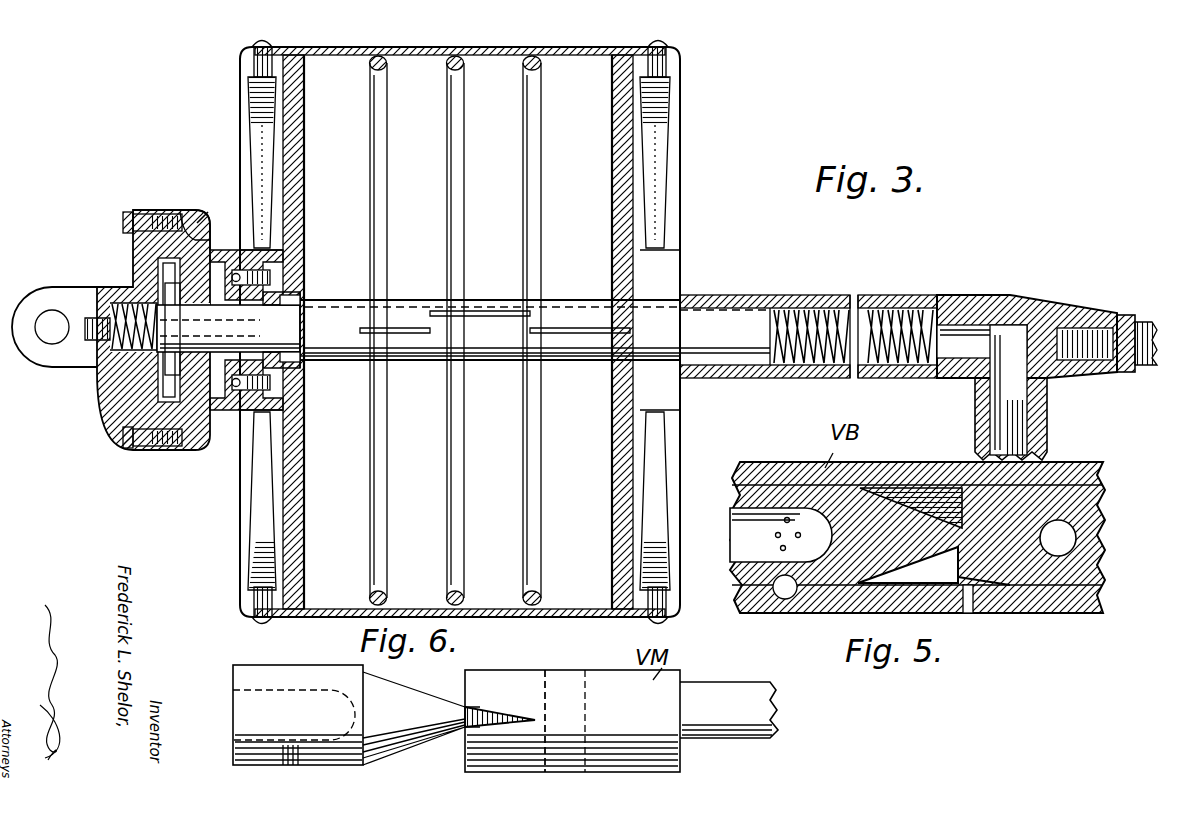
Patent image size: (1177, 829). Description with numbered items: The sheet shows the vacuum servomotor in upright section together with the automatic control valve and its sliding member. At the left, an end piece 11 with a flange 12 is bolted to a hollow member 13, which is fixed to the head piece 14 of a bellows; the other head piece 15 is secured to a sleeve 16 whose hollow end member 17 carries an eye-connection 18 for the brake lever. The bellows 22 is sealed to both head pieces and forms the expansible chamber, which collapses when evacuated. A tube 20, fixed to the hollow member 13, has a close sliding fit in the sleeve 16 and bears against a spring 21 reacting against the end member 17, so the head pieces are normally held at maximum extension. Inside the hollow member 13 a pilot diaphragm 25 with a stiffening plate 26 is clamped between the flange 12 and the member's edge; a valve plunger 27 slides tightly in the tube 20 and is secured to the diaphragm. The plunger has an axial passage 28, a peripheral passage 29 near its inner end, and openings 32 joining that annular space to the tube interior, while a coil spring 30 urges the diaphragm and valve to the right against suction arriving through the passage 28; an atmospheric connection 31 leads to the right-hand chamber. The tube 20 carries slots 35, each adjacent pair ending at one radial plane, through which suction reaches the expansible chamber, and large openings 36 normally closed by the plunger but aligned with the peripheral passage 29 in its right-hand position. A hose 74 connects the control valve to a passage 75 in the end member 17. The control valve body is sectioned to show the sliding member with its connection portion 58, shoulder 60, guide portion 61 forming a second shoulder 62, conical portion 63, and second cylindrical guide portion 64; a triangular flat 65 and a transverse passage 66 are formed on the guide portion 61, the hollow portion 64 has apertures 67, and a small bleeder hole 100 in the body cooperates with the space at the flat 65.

In FIG. 3, the end piece 11 is at (52, 290).
In FIG. 3, the flange 12 is at (143, 252).
In FIG. 3, the hollow member 13 is at (183, 212).
In FIG. 3, the head piece 14 is at (292, 133).
In FIG. 3, the head piece 15 is at (630, 133).
In FIG. 3, the sleeve 16 is at (717, 295).
In FIG. 3, the hollow end member 17 is at (995, 300).
In FIG. 3, the eye-connection 18 is at (1147, 330).
In FIG. 3, the tube 20 is at (565, 312).
In FIG. 3, the spring 21 is at (837, 282).
In FIG. 3, the bellows 22 is at (422, 613).
In FIG. 3, the pilot diaphragm 25 is at (172, 233).
In FIG. 3, the stiffening plate 26 is at (167, 270).
In FIG. 3, the valve plunger 27 is at (228, 329).
In FIG. 3, the axial passage 28 is at (357, 296).
In FIG. 3, the peripheral passage 29 is at (305, 303).
In FIG. 3, the coil spring 30 is at (112, 370).
In FIG. 3, the atmospheric connection 31 is at (197, 223).
In FIG. 3, the openings 32 is at (345, 360).
In FIG. 3, the slots 35 is at (483, 316).
In FIG. 3, the openings 36 is at (313, 296).
In FIG. 6, the connection portion 58 is at (750, 680).
In FIG. 6, the shoulder 60 is at (677, 755).
In FIG. 5, the guide portion 61 is at (1078, 495).
In FIG. 6, the guide portion 61 is at (618, 762).
In FIG. 5, the second shoulder 62 is at (953, 563).
In FIG. 6, the second shoulder 62 is at (463, 757).
In FIG. 5, the conical portion 63 is at (885, 518).
In FIG. 6, the conical portion 63 is at (400, 737).
In FIG. 5, the second cylindrical guide portion 64 is at (785, 598).
In FIG. 6, the second cylindrical guide portion 64 is at (287, 660).
In FIG. 5, the flat 65 is at (1040, 612).
In FIG. 6, the flat 65 is at (470, 717).
In FIG. 5, the transverse passage 66 is at (1058, 535).
In FIG. 6, the transverse passage 66 is at (563, 682).
In FIG. 5, the apertures 67 is at (778, 533).
In FIG. 6, the apertures 67 is at (290, 767).
In FIG. 3, the hose 74 is at (1023, 423).
In FIG. 3, the passage 75 is at (970, 345).
In FIG. 5, the bleeder hole 100 is at (973, 613).